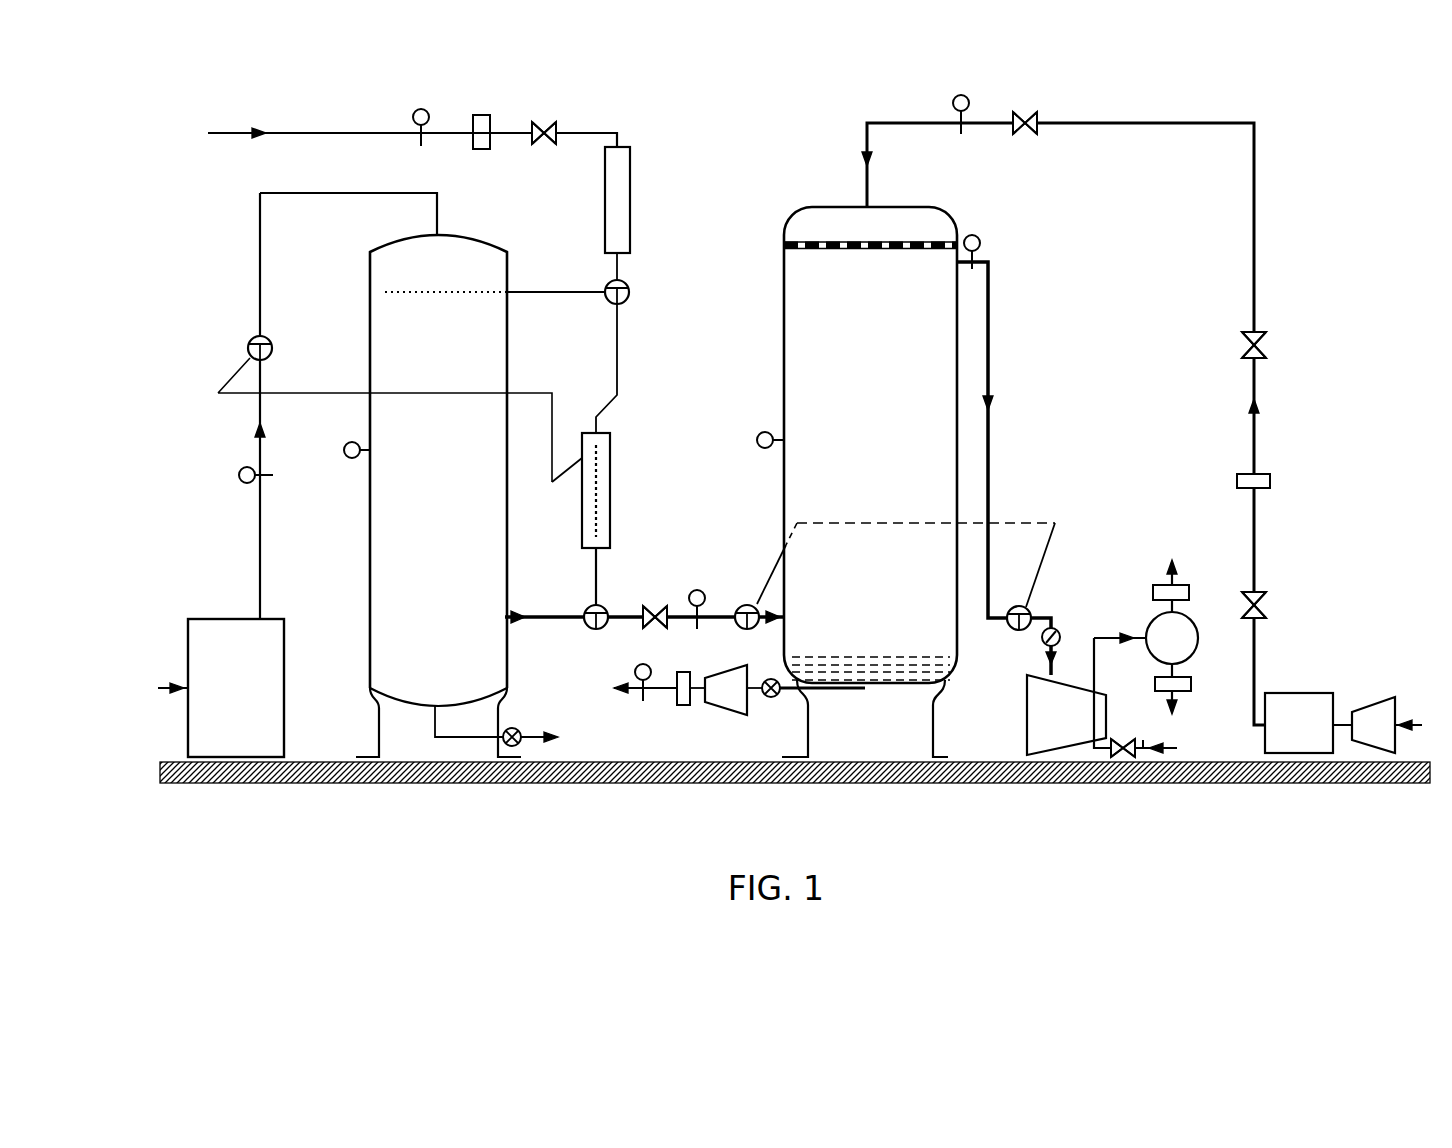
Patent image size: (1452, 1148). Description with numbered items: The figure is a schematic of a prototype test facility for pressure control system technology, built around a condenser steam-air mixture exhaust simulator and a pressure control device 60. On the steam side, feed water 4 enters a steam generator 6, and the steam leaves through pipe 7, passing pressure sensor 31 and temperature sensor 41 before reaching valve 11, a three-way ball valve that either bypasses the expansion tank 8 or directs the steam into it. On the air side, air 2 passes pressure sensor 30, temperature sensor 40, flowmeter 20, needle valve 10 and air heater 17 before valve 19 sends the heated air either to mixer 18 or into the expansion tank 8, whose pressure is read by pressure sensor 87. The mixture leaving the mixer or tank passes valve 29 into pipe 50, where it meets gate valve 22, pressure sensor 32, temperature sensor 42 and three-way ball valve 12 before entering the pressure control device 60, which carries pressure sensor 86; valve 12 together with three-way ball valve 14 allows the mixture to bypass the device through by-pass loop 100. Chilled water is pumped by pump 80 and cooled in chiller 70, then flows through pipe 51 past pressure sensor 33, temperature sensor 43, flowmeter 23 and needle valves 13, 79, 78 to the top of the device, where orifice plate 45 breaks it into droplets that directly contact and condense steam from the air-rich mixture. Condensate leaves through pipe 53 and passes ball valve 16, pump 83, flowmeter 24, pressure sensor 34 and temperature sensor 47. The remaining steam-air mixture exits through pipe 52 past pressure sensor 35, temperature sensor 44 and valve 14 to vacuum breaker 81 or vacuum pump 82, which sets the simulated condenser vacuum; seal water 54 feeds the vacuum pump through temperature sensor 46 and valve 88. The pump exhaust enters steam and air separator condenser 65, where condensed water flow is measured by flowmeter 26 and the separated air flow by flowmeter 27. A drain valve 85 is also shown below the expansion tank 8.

The air 2 is at (412, 124).
The feed water 4 is at (162, 686).
The steam generator 6 is at (227, 674).
The pipe 7 is at (385, 406).
The expansion tank 8 is at (424, 561).
The needle valve 10 is at (544, 118).
The valve 11 is at (244, 347).
The 3-way ball valve 12 is at (746, 602).
The needle valve 13 is at (1025, 109).
The 3-way ball valve 14 is at (1024, 607).
The ball valve 16 is at (765, 701).
The air heater 17 is at (634, 213).
The mixer 18 is at (596, 519).
The valve 19 is at (582, 356).
The flowmeter 20 is at (481, 117).
The gate valve 22 is at (655, 602).
The flowmeter 23 is at (1269, 480).
The flowmeter 24 is at (685, 701).
The flowmeter 26 is at (1189, 689).
The flowmeter 27 is at (1188, 586).
The valve 29 is at (595, 629).
The pressure sensor 30 is at (421, 103).
The pressure sensor 31 is at (234, 475).
The pressure sensor 32 is at (697, 586).
The pressure sensor 33 is at (962, 90).
The pressure sensor 34 is at (645, 660).
The pressure sensor 35 is at (975, 231).
The temperature sensor 40 is at (421, 146).
The temperature sensor 41 is at (277, 475).
The temperature sensor 42 is at (697, 629).
The temperature sensor 43 is at (964, 137).
The temperature sensor 44 is at (973, 274).
The orifice plate 45 is at (837, 237).
The temperature sensor 46 is at (1147, 734).
The temperature sensor 47 is at (645, 703).
The pipe 50 is at (527, 610).
The pipe 51 is at (1063, 412).
The pipe 52 is at (986, 440).
The pipe 53 is at (822, 701).
The seal water 54 is at (1167, 751).
The pressure control device 60 is at (840, 410).
The steam and air separator condenser 65 is at (1158, 638).
The chiller 70 is at (1308, 708).
The needle valve 78 is at (1272, 605).
The needle valve 79 is at (1273, 345).
The pump 80 is at (1387, 717).
The vacuum breaker 81 is at (1065, 650).
The vacuum pump 82 is at (1056, 696).
The pump 83 is at (718, 703).
The drain valve 85 is at (504, 726).
The pressure sensor 86 is at (755, 441).
The pressure sensor 87 is at (343, 450).
The valve 88 is at (1123, 738).
The by-pass loop 100 is at (768, 572).